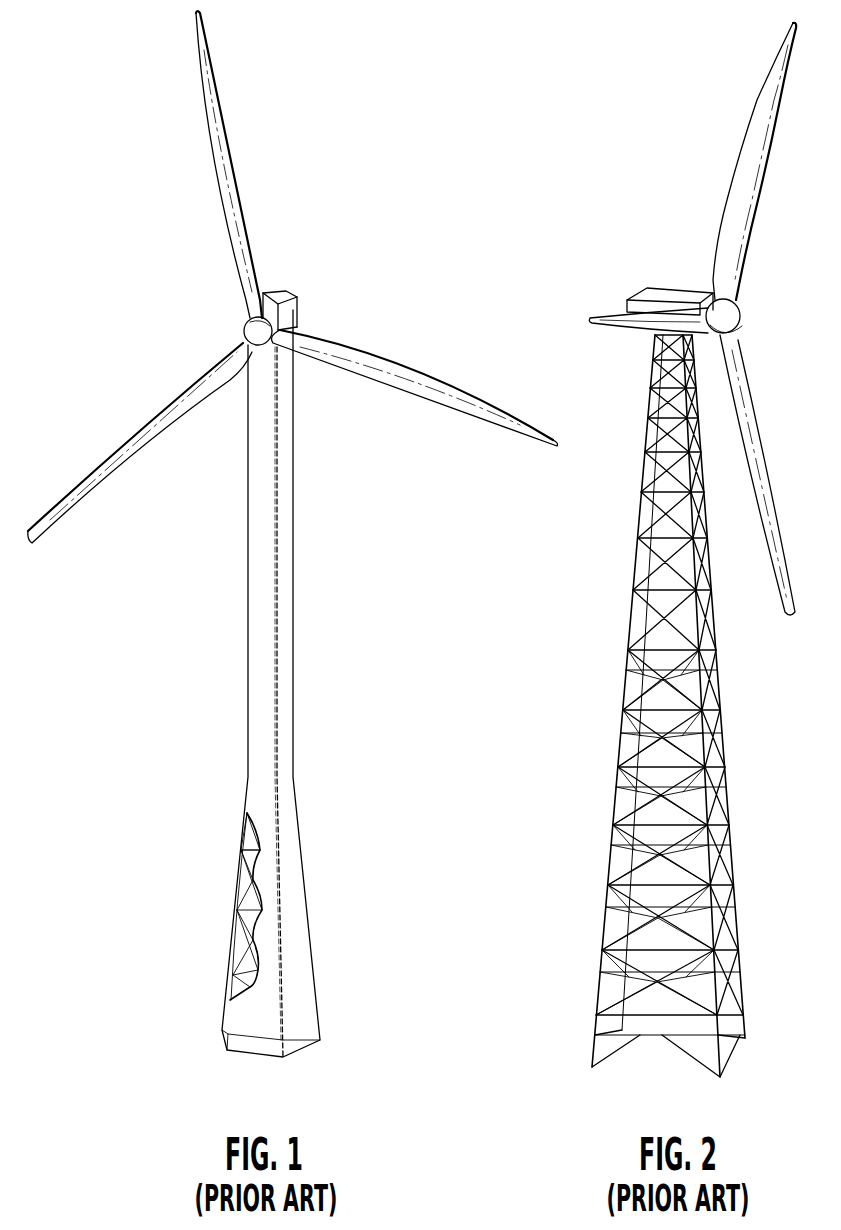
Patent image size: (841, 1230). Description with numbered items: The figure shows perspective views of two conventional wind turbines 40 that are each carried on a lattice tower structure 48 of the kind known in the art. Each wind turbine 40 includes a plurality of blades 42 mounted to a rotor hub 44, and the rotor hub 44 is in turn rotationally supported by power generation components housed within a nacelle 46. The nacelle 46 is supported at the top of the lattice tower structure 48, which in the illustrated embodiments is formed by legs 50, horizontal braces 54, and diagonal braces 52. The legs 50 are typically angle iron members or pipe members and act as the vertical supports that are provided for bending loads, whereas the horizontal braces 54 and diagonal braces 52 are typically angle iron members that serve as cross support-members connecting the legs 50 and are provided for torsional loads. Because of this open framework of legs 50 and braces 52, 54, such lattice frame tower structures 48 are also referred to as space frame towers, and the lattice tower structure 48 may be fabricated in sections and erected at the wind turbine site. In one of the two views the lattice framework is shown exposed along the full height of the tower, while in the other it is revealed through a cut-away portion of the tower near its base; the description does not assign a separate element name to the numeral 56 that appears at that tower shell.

In FIG. 1, the wind turbine 40 is at (290, 200).
In FIG. 2, the wind turbine 40 is at (651, 222).
In FIG. 1, the blades 42 is at (216, 96).
In FIG. 2, the blades 42 is at (760, 103).
In FIG. 1, the rotor hub 44 is at (240, 327).
In FIG. 2, the rotor hub 44 is at (740, 327).
In FIG. 1, the nacelle 46 is at (290, 312).
In FIG. 2, the nacelle 46 is at (663, 295).
In FIG. 1, the lattice tower structure 48 is at (316, 658).
In FIG. 2, the lattice tower structure 48 is at (591, 624).
In FIG. 1, the legs 50 is at (235, 888).
In FIG. 2, the legs 50 is at (605, 885).
In FIG. 1, the diagonal braces 52 is at (230, 957).
In FIG. 2, the diagonal braces 52 is at (700, 818).
In FIG. 2, the horizontal braces 54 is at (715, 637).
In FIG. 1, the tower outer shell 56 is at (260, 698).